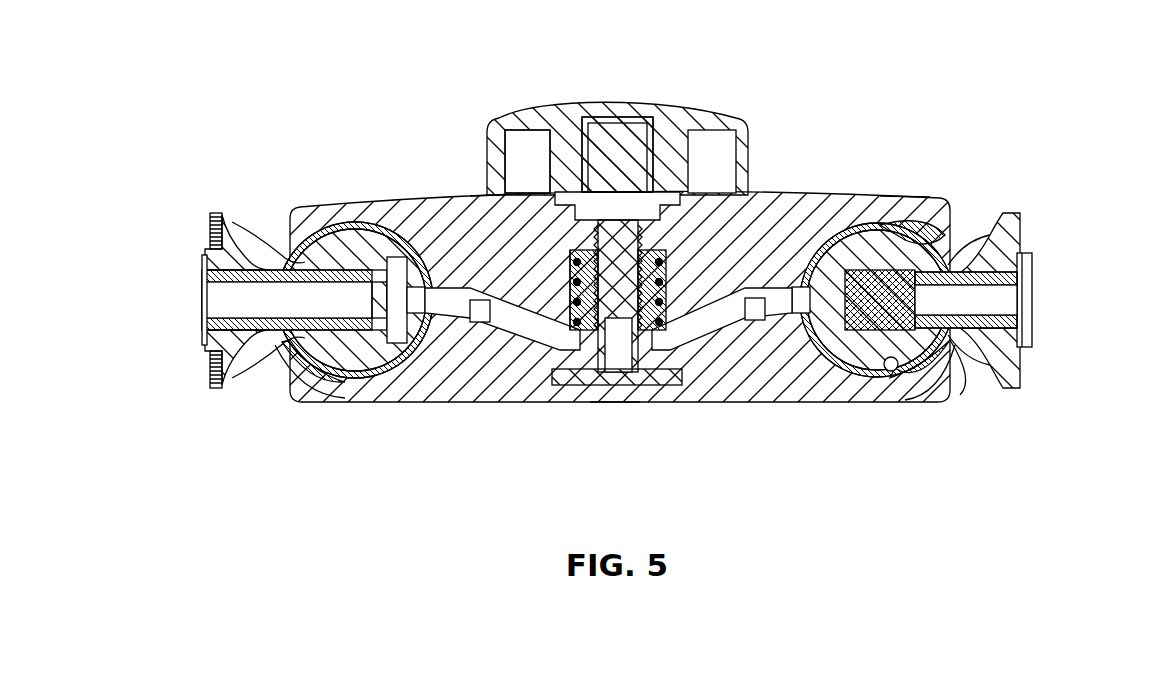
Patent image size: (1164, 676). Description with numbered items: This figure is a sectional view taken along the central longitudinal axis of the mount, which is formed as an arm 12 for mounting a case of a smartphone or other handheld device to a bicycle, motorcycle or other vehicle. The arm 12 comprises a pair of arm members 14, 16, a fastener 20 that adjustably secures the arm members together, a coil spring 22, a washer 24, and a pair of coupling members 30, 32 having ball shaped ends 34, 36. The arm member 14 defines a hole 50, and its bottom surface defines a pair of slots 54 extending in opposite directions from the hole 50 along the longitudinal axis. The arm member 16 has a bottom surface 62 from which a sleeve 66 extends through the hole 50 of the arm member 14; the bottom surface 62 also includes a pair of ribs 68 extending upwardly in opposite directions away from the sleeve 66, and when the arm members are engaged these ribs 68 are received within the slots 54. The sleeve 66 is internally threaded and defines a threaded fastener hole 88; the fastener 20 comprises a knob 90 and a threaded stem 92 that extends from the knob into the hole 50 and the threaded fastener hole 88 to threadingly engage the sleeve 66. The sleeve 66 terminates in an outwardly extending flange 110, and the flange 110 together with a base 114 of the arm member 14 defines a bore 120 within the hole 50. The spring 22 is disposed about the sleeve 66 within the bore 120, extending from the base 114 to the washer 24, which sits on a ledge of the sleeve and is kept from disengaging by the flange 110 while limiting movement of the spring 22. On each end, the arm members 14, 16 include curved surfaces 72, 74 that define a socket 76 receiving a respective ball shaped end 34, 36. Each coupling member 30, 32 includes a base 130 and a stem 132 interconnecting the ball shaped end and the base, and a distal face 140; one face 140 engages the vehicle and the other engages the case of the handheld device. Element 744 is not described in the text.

The arm 12 is at (778, 131).
The arm member 14 is at (888, 200).
The arm member 16 is at (858, 402).
The fastener 20 is at (668, 110).
The coil spring 22 is at (482, 194).
The washer 24 is at (565, 250).
The coupling member 30 is at (1022, 213).
The coupling member 32 is at (216, 212).
The ball shaped end 34 is at (960, 385).
The ball shaped end 36 is at (272, 365).
The hole 50 is at (530, 185).
The slots 54 is at (525, 310).
The bottom surface 62 is at (612, 402).
The sleeve 66 is at (575, 362).
The ribs 68 is at (478, 325).
The curved surface 72 is at (345, 238).
The curved surface 74 is at (368, 378).
The socket 76 is at (345, 386).
The threaded fastener hole 88 is at (672, 262).
The knob 90 is at (615, 192).
The threaded stem 92 is at (572, 240).
The flange 110 is at (700, 120).
The base 114 is at (660, 335).
The bore 120 is at (738, 190).
The base 130 is at (205, 335).
The stem 132 is at (260, 345).
The face 140 is at (205, 255).
The seal ring 744 is at (892, 372).